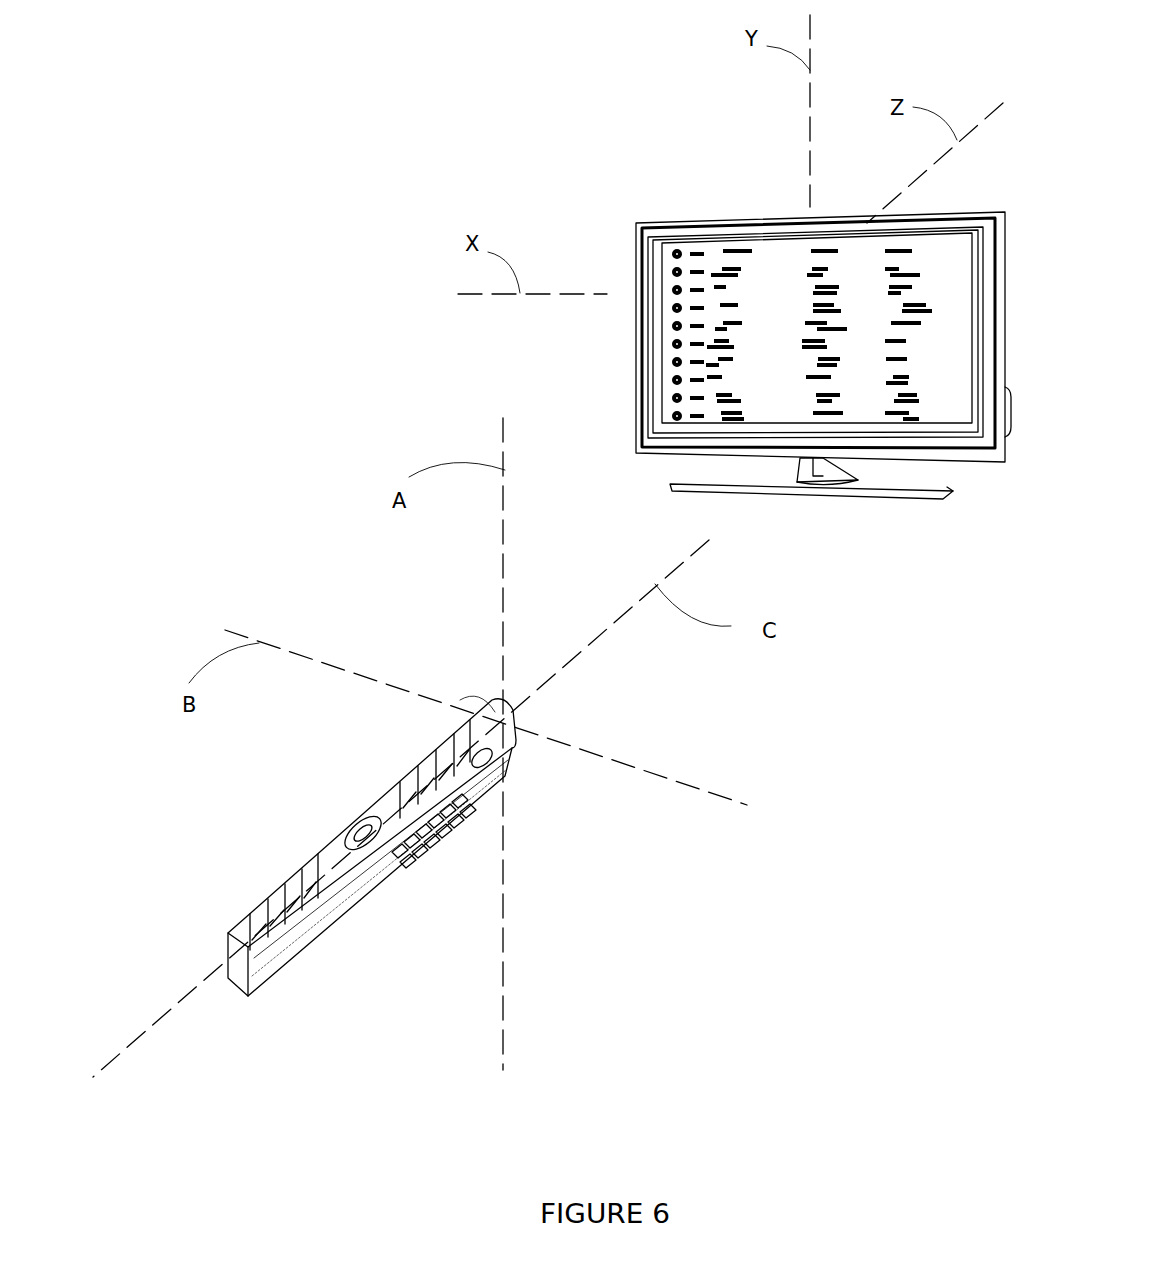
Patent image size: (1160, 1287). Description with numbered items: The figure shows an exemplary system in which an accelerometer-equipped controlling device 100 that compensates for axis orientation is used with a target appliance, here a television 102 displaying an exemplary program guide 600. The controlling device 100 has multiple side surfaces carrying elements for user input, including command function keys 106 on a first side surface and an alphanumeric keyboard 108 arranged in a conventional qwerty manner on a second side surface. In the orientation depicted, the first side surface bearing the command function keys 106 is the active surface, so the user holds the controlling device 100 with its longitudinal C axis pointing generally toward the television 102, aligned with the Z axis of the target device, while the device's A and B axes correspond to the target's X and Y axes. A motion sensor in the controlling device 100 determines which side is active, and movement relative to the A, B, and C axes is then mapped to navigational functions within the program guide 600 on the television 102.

The controlling device 100 is at (228, 950).
The television 102 is at (747, 222).
The command function keys 106 is at (430, 748).
The alphanumeric keyboard 108 is at (488, 798).
The program guide 600 is at (640, 252).